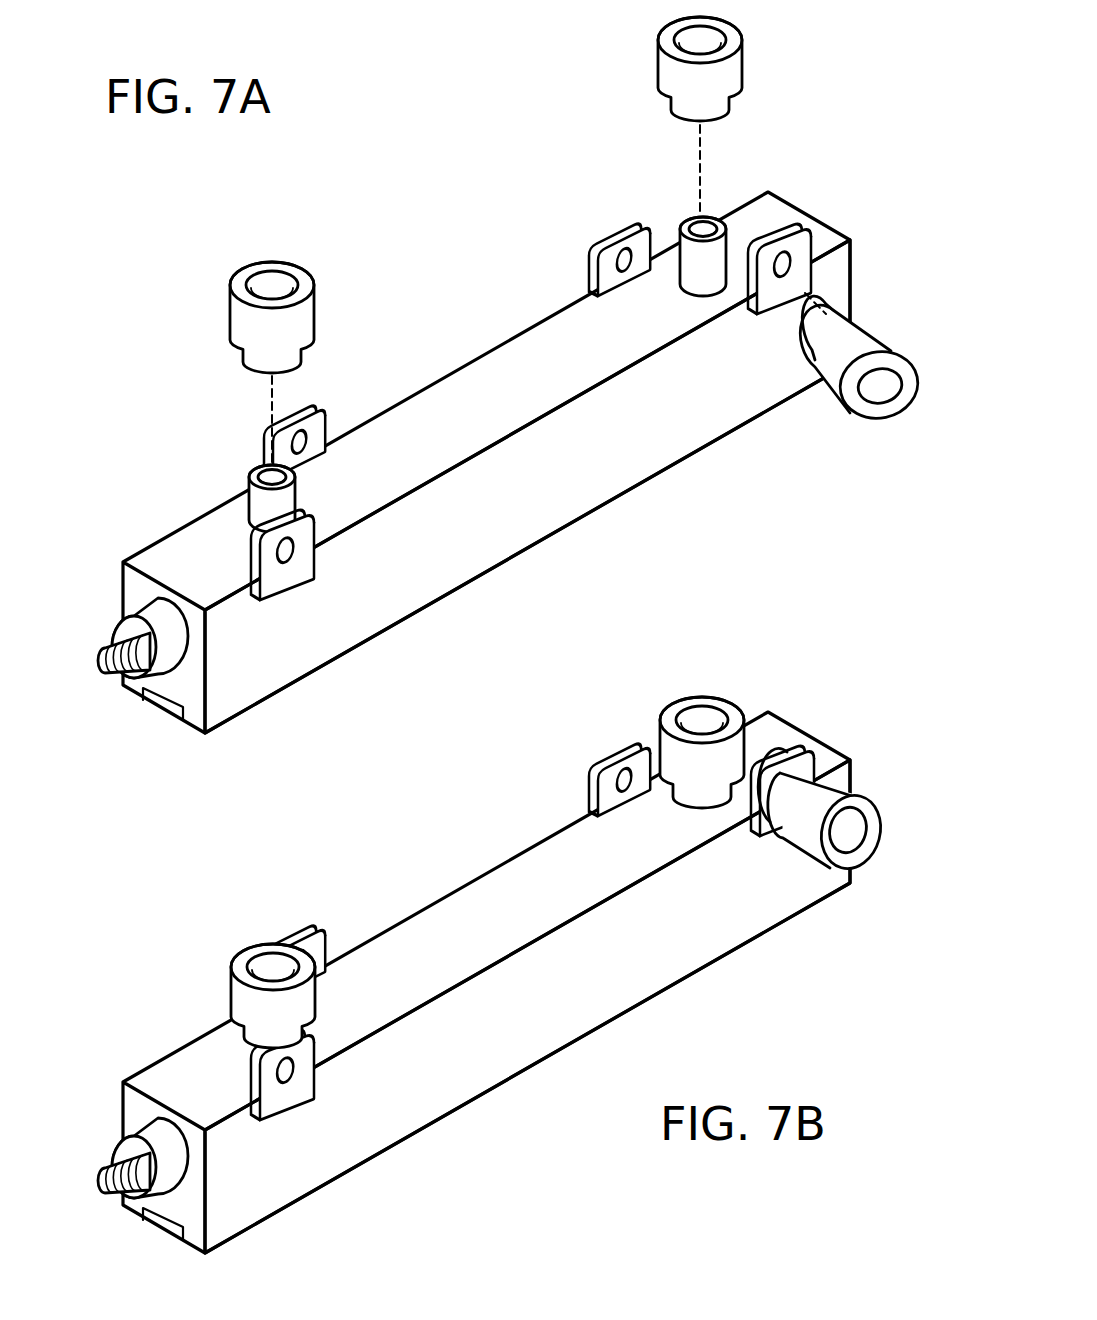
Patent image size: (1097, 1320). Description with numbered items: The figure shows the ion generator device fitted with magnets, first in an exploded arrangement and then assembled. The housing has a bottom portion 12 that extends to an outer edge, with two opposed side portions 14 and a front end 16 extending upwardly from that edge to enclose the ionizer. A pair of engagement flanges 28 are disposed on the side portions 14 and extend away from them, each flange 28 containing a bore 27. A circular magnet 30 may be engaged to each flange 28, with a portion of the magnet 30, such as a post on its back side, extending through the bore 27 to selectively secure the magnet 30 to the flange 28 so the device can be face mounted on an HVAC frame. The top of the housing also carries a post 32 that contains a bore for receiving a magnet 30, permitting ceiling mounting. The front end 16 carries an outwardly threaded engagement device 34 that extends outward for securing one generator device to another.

In FIG. 7A, the bottom portion 12 is at (778, 211).
In FIG. 7B, the bottom portion 12 is at (489, 901).
In FIG. 7A, the opposed side portions 14 is at (492, 538).
In FIG. 7B, the opposed side portions 14 is at (730, 926).
In FIG. 7A, the front end 16 is at (195, 712).
In FIG. 7A, the bore 27 is at (287, 560).
In FIG. 7B, the bore 27 is at (285, 1077).
In FIG. 7A, the engagement flange 28 is at (802, 242).
In FIG. 7B, the engagement flange 28 is at (813, 762).
In FIG. 7A, the magnet 30 is at (725, 71).
In FIG. 7B, the magnet 30 is at (240, 962).
In FIG. 7A, the post 32 is at (258, 500).
In FIG. 7A, the engagement device 34 is at (107, 653).
In FIG. 7B, the engagement device 34 is at (107, 1168).